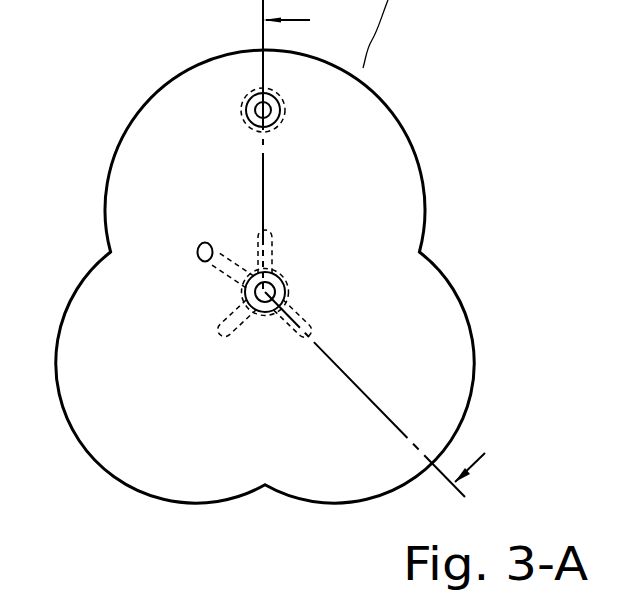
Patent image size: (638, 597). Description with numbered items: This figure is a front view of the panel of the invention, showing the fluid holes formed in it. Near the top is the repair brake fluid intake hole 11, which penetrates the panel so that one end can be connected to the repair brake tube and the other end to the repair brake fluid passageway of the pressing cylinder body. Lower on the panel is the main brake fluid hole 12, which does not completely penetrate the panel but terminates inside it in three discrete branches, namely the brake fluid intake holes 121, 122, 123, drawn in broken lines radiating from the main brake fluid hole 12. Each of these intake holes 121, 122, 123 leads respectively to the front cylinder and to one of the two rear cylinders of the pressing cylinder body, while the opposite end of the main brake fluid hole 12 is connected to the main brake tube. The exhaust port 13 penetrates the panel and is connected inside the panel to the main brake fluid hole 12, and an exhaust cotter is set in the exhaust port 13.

The repair brake fluid intake hole 11 is at (259, 108).
The main brake fluid hole 12 is at (286, 281).
The brake fluid intake hole 121 is at (270, 243).
The brake fluid intake hole 122 is at (238, 324).
The brake fluid intake hole 123 is at (306, 332).
The exhaust port 13 is at (220, 258).